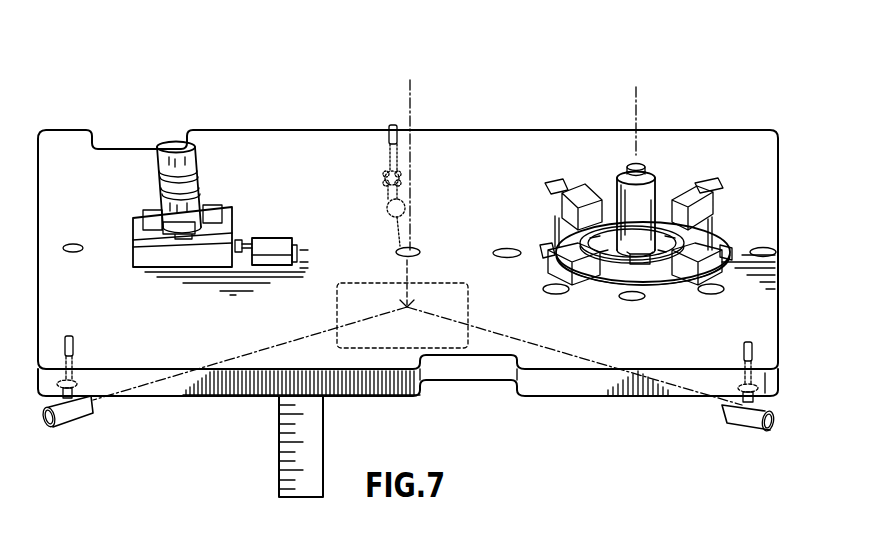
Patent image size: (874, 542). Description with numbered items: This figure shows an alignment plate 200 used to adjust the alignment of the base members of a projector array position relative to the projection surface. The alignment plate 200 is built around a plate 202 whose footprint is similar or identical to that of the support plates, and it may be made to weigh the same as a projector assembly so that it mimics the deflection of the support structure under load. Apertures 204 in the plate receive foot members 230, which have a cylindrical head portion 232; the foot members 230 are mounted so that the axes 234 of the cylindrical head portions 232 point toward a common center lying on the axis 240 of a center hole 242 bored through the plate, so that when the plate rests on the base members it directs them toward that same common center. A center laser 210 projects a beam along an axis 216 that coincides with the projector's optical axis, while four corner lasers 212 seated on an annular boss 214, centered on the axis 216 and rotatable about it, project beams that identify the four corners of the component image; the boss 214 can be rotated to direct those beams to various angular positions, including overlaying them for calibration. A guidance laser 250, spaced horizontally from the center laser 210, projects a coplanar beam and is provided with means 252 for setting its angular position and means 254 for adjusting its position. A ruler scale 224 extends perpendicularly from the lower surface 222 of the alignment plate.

The alignment plate 200 is at (732, 84).
The plate 202 is at (373, 283).
The apertures 204 is at (383, 175).
The center laser 210 is at (617, 192).
The corner lasers 212 is at (547, 250).
The annular boss 214 is at (645, 273).
The axis 216 is at (635, 106).
The lower surface 222 is at (244, 396).
The ruler scale 224 is at (308, 464).
The foot members 230 is at (382, 187).
The head portion 232 is at (385, 203).
The axes 234 is at (400, 242).
The axis 240 is at (410, 97).
The center hole 242 is at (414, 248).
The guidance laser 250 is at (160, 163).
The means for setting the angular position 252 is at (230, 212).
The means for adjusting the position 254 is at (268, 242).